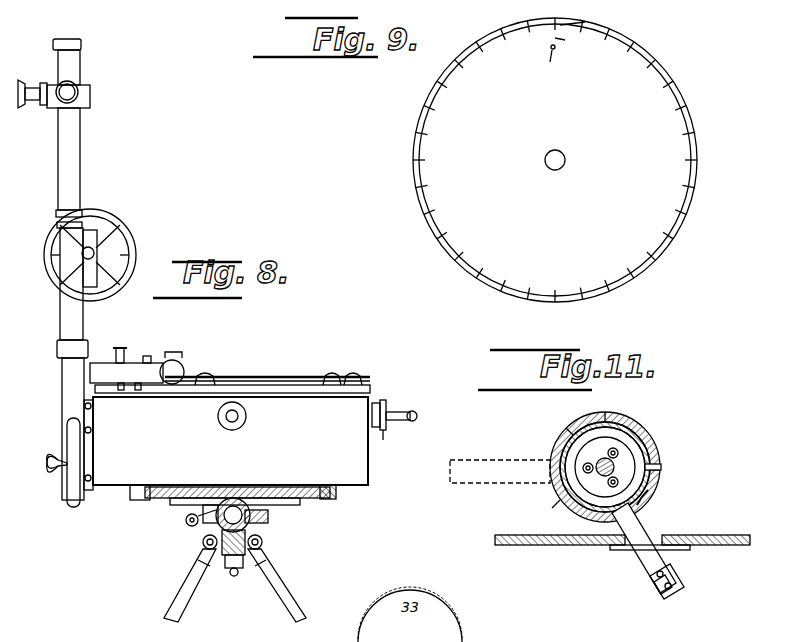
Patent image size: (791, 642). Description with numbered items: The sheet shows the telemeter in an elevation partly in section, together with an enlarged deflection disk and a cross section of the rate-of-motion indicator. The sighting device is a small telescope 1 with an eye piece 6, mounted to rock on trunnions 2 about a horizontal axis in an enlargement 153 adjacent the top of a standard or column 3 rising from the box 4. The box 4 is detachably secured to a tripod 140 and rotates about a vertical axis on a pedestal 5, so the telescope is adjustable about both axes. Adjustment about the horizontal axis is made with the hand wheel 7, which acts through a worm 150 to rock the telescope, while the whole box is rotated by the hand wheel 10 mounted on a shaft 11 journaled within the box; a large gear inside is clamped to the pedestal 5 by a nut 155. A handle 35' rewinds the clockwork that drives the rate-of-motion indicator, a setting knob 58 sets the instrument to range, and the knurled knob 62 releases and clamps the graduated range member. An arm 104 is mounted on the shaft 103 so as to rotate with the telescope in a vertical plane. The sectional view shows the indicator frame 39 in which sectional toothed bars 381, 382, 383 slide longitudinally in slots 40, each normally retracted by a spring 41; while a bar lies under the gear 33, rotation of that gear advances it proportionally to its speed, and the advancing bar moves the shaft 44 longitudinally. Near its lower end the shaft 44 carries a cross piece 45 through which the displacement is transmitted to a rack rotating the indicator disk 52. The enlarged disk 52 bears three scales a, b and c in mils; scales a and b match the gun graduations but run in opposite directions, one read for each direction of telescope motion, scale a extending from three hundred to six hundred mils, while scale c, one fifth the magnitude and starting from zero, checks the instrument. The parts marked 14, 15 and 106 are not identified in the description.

In FIG. 8, the telescope 1 is at (78, 68).
In FIG. 8, the trunnions 2 is at (72, 97).
In FIG. 8, the standard 3 is at (77, 161).
In FIG. 8, the box 4 is at (230, 441).
In FIG. 8, the pedestal 5 is at (224, 533).
In FIG. 8, the eye piece 6 is at (21, 82).
In FIG. 8, the hand wheel 7 is at (115, 219).
In FIG. 8, the hand wheel 10 is at (70, 490).
In FIG. 8, the shaft 11 is at (90, 462).
In FIG. 8, the base plate 14 is at (318, 496).
In FIG. 8, the base support 15 is at (282, 498).
In FIG. 11, the gear 33 is at (500, 482).
In FIG. 8, the handle 35' is at (404, 414).
In FIG. 11, the frame 39 is at (648, 470).
In FIG. 11, the slots 40 is at (562, 492).
In FIG. 11, the spring 41 is at (620, 438).
In FIG. 11, the shaft 44 is at (604, 458).
In FIG. 11, the cross piece 45 is at (622, 551).
In FIG. 9, the indicator disk 52 is at (555, 160).
In FIG. 8, the setting handle 58 is at (236, 428).
In FIG. 8, the knurled knob 62 is at (222, 420).
In FIG. 8, the shaft 103 is at (125, 352).
In FIG. 8, the arm 104 is at (287, 380).
In FIG. 8, the pin 106 is at (385, 432).
In FIG. 8, the tripod 140 is at (268, 565).
In FIG. 8, the worm 150 is at (90, 258).
In FIG. 8, the enlargement 153 is at (91, 96).
In FIG. 8, the nut 155 is at (187, 527).
In FIG. 11, the sectional toothed bar 381 is at (641, 446).
In FIG. 11, the sectional toothed bar 382 is at (642, 486).
In FIG. 11, the sectional toothed bar 383 is at (562, 447).
In FIG. 9, the scale a is at (578, 15).
In FIG. 9, the scale b is at (566, 40).
In FIG. 9, the scale c is at (550, 62).